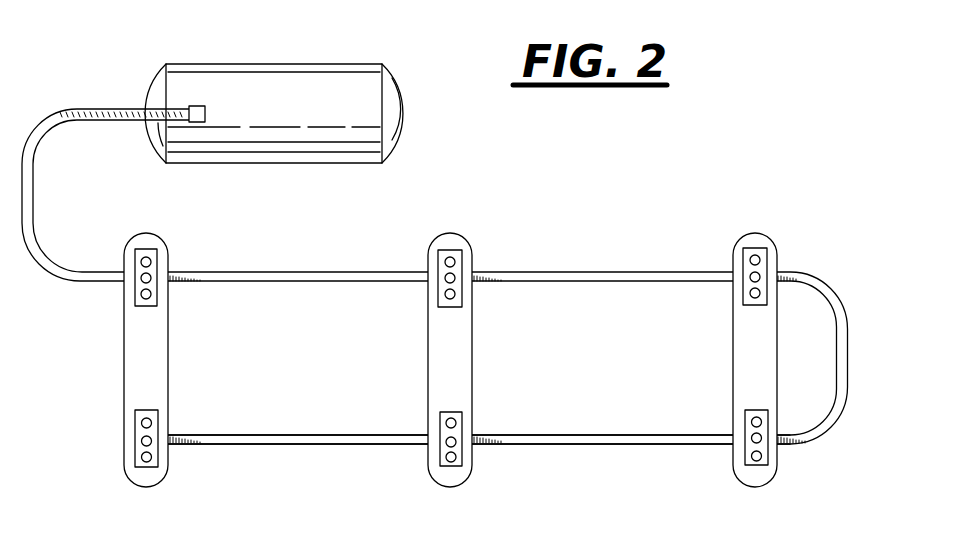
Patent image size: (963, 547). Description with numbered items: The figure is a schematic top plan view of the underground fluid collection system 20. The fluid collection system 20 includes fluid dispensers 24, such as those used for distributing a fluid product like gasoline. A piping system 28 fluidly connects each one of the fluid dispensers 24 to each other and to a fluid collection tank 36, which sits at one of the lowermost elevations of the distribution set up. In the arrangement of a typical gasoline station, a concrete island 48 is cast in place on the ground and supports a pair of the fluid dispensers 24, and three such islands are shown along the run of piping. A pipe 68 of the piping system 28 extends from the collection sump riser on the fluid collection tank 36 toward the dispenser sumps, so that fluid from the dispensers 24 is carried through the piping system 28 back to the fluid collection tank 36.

The fluid collection system 20 is at (435, 314).
The fluid dispenser 24 is at (152, 270).
The piping system 28 is at (301, 273).
The fluid collection tank 36 is at (275, 83).
The concrete island 48 is at (465, 344).
The pipe 68 is at (308, 446).